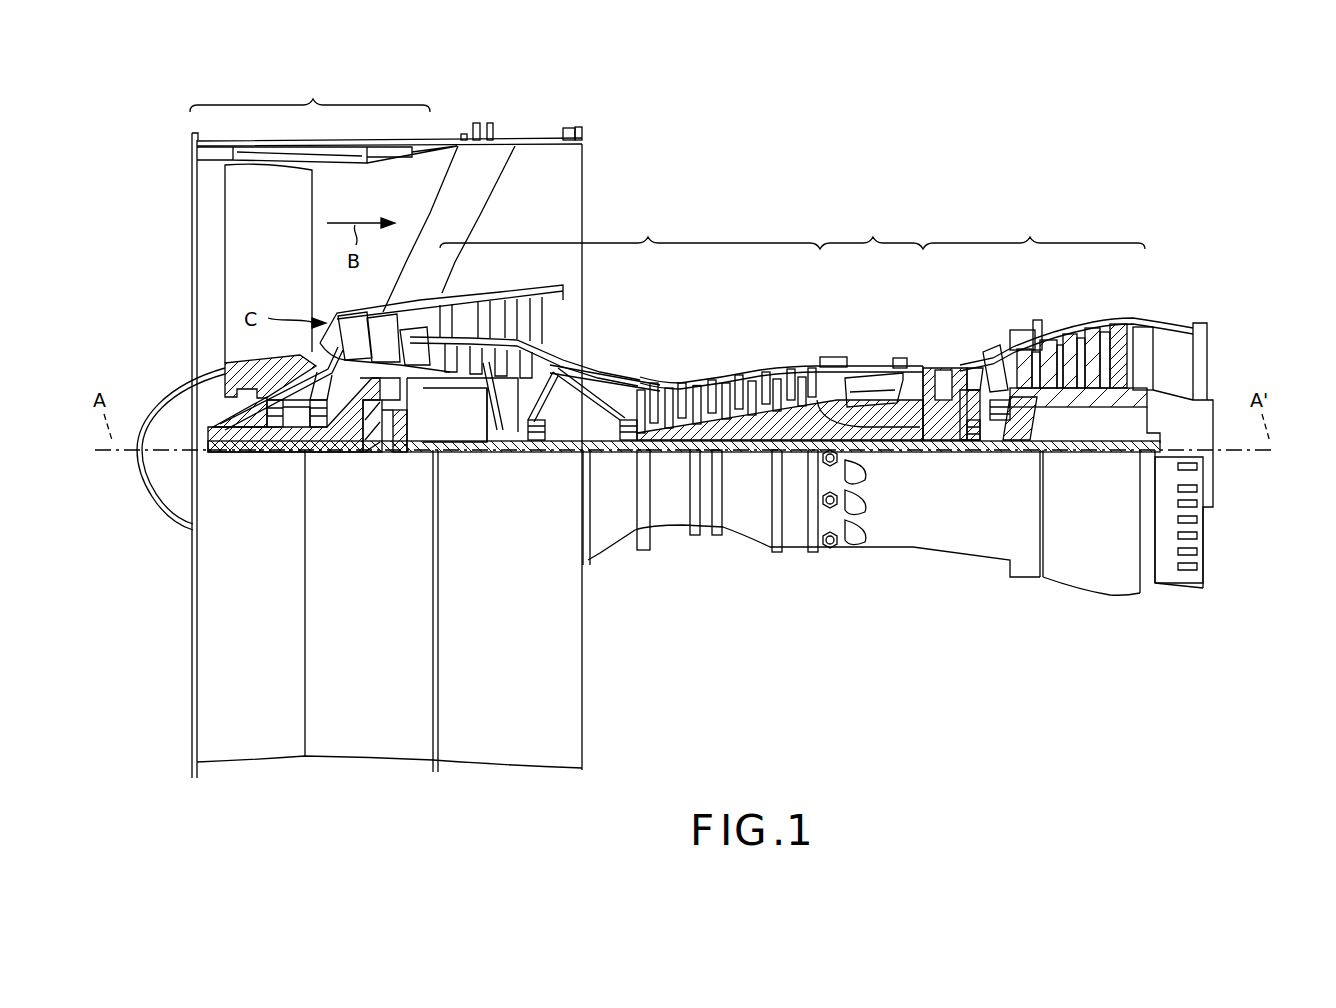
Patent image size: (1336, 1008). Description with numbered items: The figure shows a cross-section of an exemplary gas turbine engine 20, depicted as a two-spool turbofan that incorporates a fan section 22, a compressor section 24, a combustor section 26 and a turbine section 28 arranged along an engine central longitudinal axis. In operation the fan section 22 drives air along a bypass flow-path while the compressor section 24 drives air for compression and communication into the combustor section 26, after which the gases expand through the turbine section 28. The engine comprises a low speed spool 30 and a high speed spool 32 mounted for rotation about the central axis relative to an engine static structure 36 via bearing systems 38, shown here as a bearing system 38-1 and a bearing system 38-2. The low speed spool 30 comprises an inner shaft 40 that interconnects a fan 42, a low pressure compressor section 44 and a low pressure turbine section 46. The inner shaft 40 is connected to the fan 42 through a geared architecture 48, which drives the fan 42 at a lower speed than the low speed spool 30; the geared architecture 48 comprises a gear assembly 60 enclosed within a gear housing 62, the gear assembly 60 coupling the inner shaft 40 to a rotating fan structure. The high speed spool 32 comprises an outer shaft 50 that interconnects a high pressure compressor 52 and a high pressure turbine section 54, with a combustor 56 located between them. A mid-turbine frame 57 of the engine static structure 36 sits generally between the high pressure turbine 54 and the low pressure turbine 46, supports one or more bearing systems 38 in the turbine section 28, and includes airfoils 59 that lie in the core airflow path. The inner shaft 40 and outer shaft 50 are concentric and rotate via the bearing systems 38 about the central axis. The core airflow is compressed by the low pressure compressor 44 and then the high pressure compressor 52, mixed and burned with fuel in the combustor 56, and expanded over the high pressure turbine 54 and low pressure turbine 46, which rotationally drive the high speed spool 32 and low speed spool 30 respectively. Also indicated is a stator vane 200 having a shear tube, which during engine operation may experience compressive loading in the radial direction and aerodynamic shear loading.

The gas turbine engine 20 is at (931, 184).
The fan section 22 is at (386, 426).
The compressor section 24 is at (792, 229).
The combustor section 26 is at (868, 226).
The turbine section 28 is at (1032, 226).
The low speed spool 30 is at (752, 470).
The high speed spool 32 is at (793, 410).
The engine static structure 36 is at (190, 762).
The bearing system 38 is at (985, 455).
The bearing system 38-1 is at (280, 440).
The bearing system 38-2 is at (537, 444).
The inner shaft 40 is at (603, 455).
The fan 42 is at (387, 450).
The low pressure compressor section 44 is at (540, 342).
The low pressure turbine section 46 is at (1075, 345).
The geared architecture 48 is at (402, 455).
The outer shaft 50 is at (868, 445).
The high pressure compressor 52 is at (750, 385).
The high pressure turbine section 54 is at (920, 370).
The combustor 56 is at (878, 380).
The mid-turbine frame 57 is at (993, 355).
The airfoils 59 is at (1010, 352).
The gear assembly 60 is at (402, 430).
The gear housing 62 is at (400, 396).
The stator vane 200 is at (945, 375).